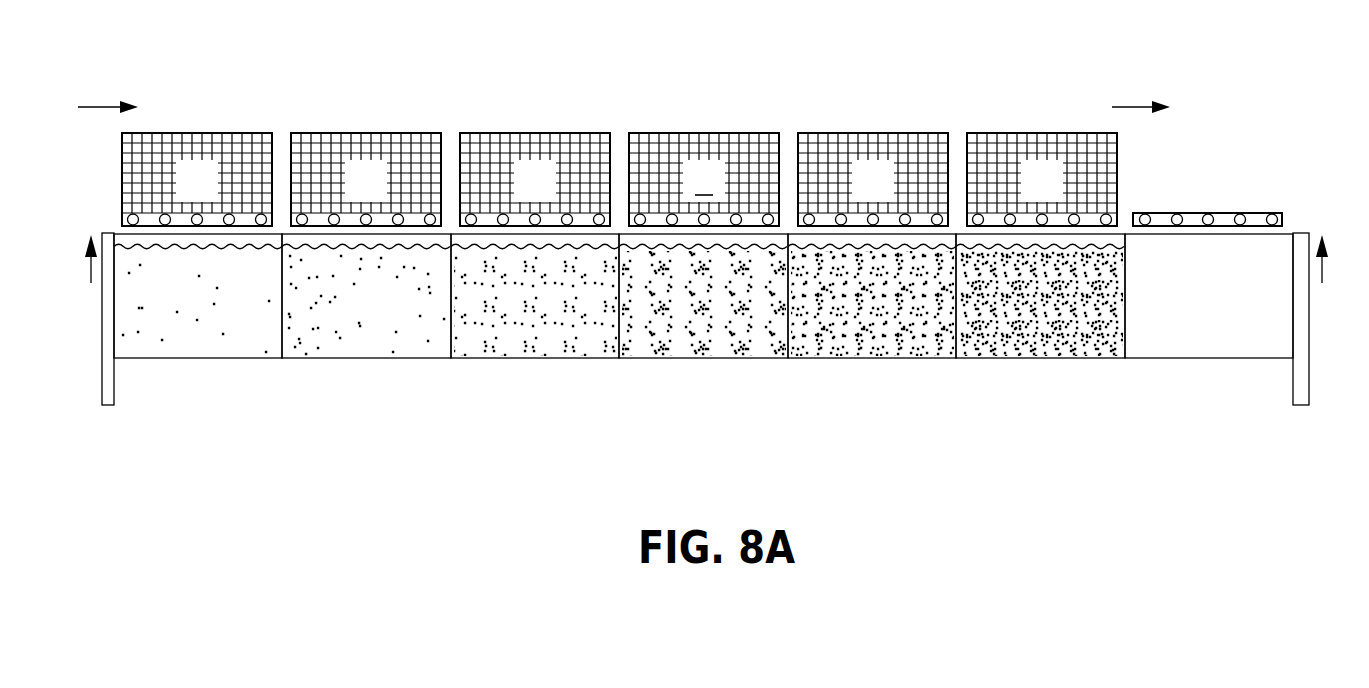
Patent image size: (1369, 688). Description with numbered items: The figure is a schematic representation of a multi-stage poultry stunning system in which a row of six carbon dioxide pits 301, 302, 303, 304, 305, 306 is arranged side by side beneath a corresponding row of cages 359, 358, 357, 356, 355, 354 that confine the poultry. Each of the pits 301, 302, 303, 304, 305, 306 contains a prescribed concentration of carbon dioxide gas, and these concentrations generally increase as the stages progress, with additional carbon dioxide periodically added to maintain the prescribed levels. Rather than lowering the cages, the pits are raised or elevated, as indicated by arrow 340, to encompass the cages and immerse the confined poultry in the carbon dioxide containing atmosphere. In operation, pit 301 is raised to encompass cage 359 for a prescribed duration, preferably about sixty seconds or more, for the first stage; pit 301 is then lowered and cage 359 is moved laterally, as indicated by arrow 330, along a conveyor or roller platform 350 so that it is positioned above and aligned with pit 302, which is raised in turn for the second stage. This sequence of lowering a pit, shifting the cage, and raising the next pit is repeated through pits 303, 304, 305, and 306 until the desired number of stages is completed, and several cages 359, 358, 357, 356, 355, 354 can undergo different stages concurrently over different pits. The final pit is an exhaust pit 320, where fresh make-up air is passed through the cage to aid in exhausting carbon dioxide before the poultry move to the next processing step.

The carbon dioxide pit 301 is at (198, 358).
The carbon dioxide pit 302 is at (366, 358).
The carbon dioxide pit 303 is at (535, 358).
The carbon dioxide pit 304 is at (704, 358).
The carbon dioxide pit 305 is at (873, 358).
The carbon dioxide pit 306 is at (1042, 358).
The exhaust pit 320 is at (1209, 358).
The arrow 330 is at (1155, 67).
The arrow 340 is at (1345, 306).
The conveyor or roller platform 350 is at (1195, 213).
The cage 354 is at (1012, 140).
The cage 355 is at (843, 140).
The cage 356 is at (674, 140).
The cage 357 is at (505, 140).
The cage 358 is at (336, 140).
The cage 359 is at (167, 140).